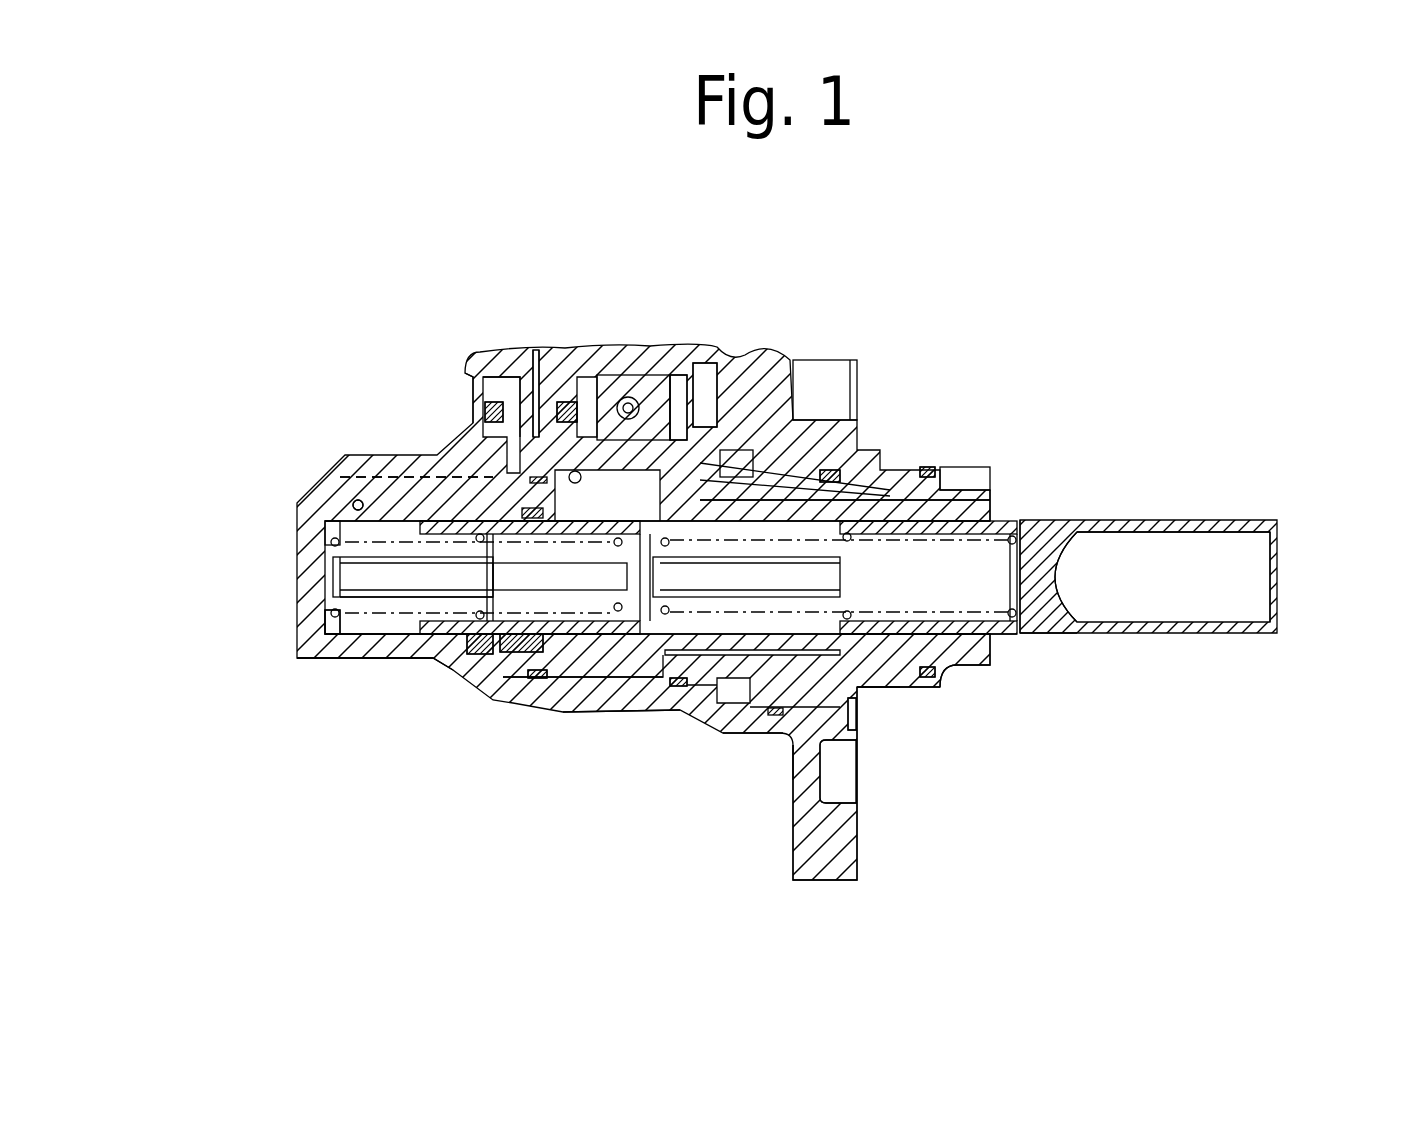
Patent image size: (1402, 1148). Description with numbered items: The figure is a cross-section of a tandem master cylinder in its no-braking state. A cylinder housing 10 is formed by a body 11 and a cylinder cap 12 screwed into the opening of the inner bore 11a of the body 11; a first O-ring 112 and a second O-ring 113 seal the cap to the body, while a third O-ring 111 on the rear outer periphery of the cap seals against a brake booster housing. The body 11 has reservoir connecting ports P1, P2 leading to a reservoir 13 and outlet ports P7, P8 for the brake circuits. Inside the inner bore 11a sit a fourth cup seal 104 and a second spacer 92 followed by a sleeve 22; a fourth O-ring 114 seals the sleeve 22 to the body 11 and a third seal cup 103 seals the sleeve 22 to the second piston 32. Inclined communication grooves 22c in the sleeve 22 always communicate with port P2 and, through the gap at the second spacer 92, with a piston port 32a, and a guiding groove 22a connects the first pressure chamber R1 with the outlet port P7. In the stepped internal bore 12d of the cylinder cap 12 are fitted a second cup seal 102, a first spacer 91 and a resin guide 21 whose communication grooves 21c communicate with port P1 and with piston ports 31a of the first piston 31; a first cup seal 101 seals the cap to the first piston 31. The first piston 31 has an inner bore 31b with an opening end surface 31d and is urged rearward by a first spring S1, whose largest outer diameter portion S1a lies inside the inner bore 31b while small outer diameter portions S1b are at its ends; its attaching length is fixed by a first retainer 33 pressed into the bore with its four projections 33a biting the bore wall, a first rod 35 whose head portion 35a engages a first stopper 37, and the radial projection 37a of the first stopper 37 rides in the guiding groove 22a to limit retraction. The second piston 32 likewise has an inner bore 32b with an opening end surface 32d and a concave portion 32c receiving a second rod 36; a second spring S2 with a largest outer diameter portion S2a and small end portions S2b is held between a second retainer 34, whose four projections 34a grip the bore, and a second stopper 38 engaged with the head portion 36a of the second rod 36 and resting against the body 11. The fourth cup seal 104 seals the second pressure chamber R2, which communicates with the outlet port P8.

The cylinder housing 10 is at (307, 445).
The body 11 is at (313, 505).
The inner bore 11a is at (738, 400).
The cylinder cap 12 is at (873, 690).
The stepped internal bore 12d is at (805, 440).
The reservoir 13 is at (656, 400).
The guide 21 is at (955, 480).
The communication grooves 21c is at (907, 490).
The sleeve 22 is at (850, 732).
The guiding groove 22a is at (583, 375).
The communication grooves 22c is at (460, 420).
The first piston 31 is at (1187, 525).
The piston ports 31a is at (830, 480).
The inner bore 31b is at (1017, 640).
The opening end surface 31d is at (877, 687).
The second piston 32 is at (680, 672).
The piston port 32a is at (450, 535).
The inner bore 32b is at (577, 714).
The concave portion 32c is at (600, 717).
The opening end surface 32d is at (380, 657).
The first retainer 33 is at (1073, 630).
The projections 33a is at (1063, 640).
The second retainer 34 is at (607, 440).
The projections 34a is at (613, 720).
The first rod 35 is at (1008, 530).
The head portion 35a is at (827, 875).
The second rod 36 is at (470, 560).
The head portion 36a is at (480, 578).
The first stopper 37 is at (797, 882).
The radial projection 37a is at (618, 400).
The second stopper 38 is at (430, 600).
The first spacer 91 is at (878, 500).
The second spacer 92 is at (485, 465).
The first cup seal 101 is at (990, 490).
The second cup seal 102 is at (872, 500).
The third seal cup 103 is at (500, 703).
The fourth cup seal 104 is at (470, 505).
The third O-ring 111 is at (928, 676).
The first O-ring 112 is at (775, 757).
The second O-ring 113 is at (720, 690).
The fourth O-ring 114 is at (537, 717).
The reservoir connecting port P1 is at (713, 400).
The reservoir connecting port P2 is at (515, 395).
The outlet port P7 is at (537, 400).
The outlet port P8 is at (318, 508).
The first pressure chamber R1 is at (773, 737).
The second pressure chamber R2 is at (360, 665).
The first spring S1 is at (1000, 640).
The largest outer diameter portion S1a is at (898, 682).
The small outer diameter portion S1b is at (1077, 523).
The second spring S2 is at (340, 640).
The largest outer diameter portion S2a is at (455, 692).
The small outer diameter portion S2b is at (322, 622).